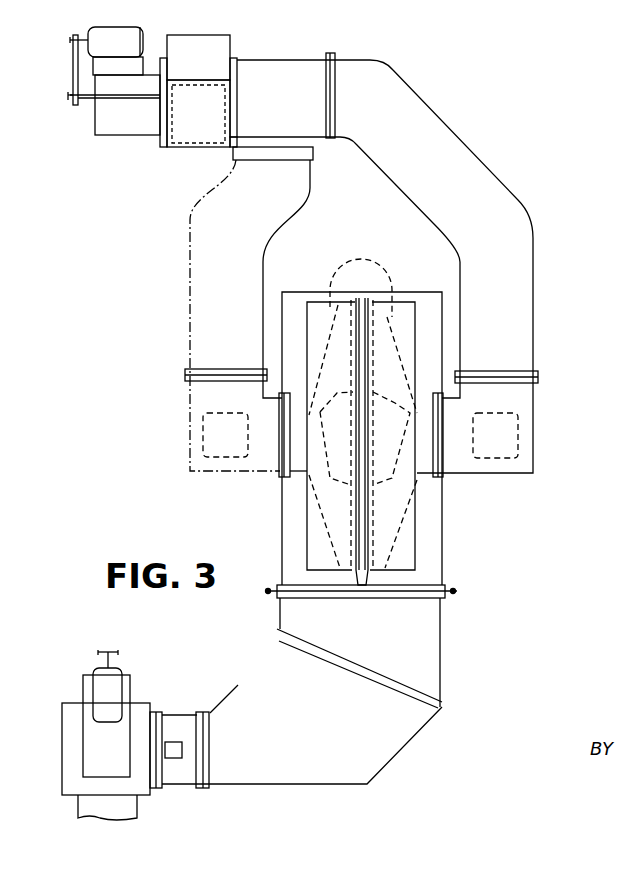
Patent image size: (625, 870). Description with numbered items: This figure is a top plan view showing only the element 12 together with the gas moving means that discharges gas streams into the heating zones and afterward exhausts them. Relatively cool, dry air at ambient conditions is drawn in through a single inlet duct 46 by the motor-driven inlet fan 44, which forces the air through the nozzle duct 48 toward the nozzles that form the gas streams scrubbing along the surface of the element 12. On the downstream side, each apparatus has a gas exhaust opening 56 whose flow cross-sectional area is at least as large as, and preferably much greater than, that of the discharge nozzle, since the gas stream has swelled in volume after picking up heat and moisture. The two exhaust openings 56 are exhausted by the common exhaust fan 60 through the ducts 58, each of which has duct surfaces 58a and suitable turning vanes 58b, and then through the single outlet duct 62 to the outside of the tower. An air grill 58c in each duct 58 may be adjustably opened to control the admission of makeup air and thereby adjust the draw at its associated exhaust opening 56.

The element 12 is at (364, 372).
The inlet fan 44 is at (72, 740).
The inlet duct 46 is at (125, 808).
The nozzle duct 48 is at (283, 518).
The gas exhaust opening 56 is at (360, 300).
The duct 58 is at (195, 305).
The duct surfaces 58a is at (358, 259).
The turning vanes 58b is at (357, 412).
The air grill 58c is at (210, 437).
The exhaust fan 60 is at (216, 40).
The outlet duct 62 is at (175, 148).